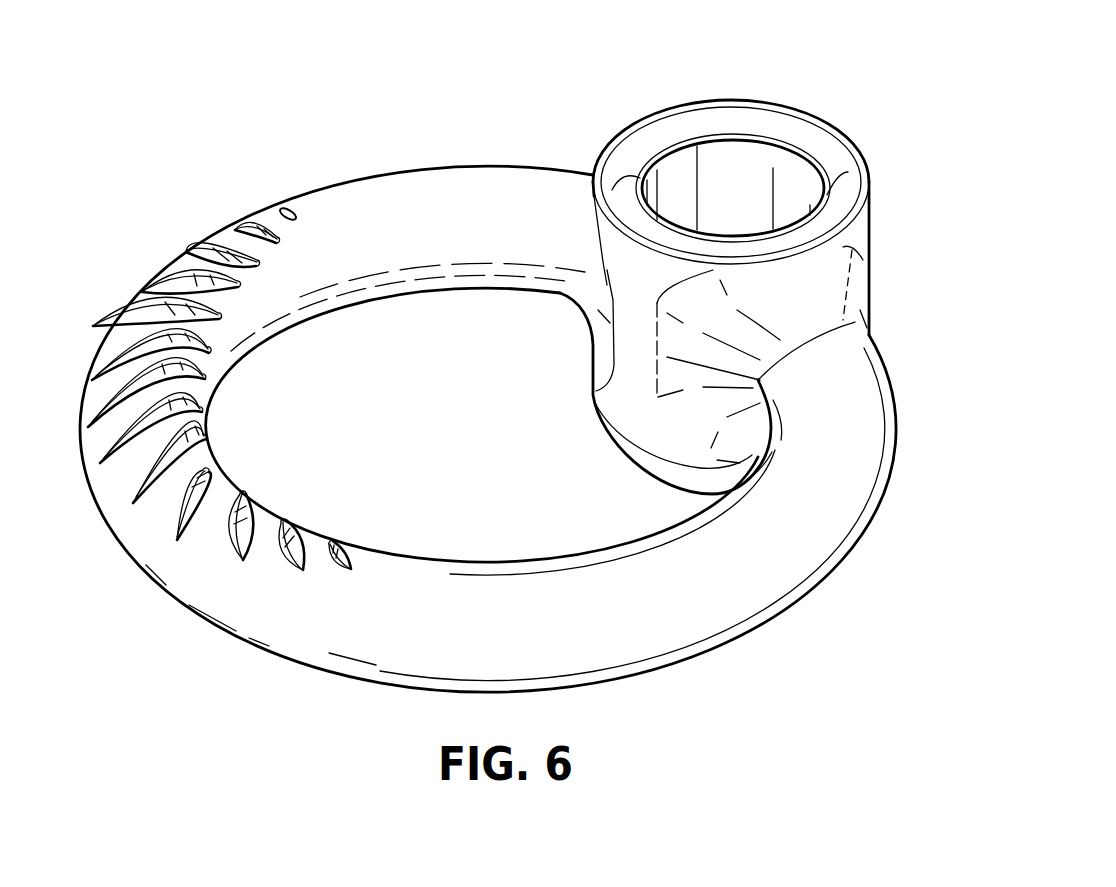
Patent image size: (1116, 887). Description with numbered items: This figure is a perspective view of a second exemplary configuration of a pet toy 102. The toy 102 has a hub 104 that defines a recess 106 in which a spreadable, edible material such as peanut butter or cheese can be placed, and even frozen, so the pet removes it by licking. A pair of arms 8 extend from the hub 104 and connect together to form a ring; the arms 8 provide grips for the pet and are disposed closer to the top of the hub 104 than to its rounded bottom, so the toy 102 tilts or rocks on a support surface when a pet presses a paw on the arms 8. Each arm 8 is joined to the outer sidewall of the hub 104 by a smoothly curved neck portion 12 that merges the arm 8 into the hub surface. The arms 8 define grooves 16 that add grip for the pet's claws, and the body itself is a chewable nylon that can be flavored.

The arm 8 is at (527, 180).
The neck portion 12 is at (725, 253).
The grooves 16 is at (164, 352).
The pet toy 102 is at (495, 388).
The hub 104 is at (870, 210).
The recess 106 is at (808, 183).